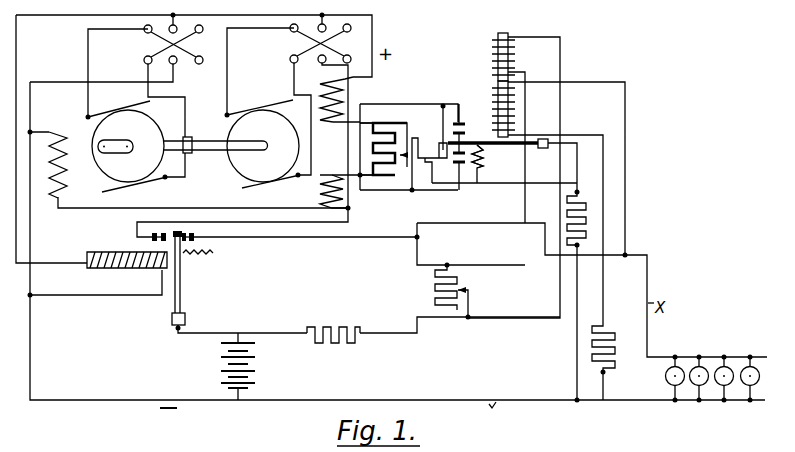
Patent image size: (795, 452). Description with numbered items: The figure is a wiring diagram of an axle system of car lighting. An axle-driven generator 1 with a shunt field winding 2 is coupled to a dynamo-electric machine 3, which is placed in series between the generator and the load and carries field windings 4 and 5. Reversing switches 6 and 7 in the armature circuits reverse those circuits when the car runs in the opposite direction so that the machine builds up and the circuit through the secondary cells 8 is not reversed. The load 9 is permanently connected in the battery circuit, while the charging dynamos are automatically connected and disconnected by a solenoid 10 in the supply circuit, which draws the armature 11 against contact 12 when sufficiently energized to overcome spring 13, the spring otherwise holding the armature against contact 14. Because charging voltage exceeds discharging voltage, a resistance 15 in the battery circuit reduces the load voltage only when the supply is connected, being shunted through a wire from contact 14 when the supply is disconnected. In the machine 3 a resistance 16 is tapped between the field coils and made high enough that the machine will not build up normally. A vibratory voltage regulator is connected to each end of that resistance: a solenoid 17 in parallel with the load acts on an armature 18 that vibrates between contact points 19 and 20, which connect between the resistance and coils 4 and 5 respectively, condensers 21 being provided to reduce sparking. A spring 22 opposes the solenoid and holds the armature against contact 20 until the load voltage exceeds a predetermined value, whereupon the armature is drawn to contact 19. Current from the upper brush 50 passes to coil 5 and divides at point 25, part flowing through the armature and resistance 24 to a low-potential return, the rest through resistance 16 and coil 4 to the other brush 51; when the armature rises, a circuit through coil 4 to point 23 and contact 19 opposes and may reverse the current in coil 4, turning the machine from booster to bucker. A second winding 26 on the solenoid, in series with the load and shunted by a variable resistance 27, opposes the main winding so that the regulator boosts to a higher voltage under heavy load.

The generator 1 is at (128, 146).
The shunt field winding 2 is at (66, 171).
The dynamo-electric machine 3 is at (263, 146).
The field winding 4 is at (320, 83).
The field winding 5 is at (318, 197).
The reversing switch 6 is at (146, 33).
The reversing switch 7 is at (293, 32).
The secondary cells 8 is at (225, 361).
The load 9 is at (703, 357).
The solenoid 10 is at (126, 248).
The armature 11 is at (182, 290).
The contact 12 is at (149, 243).
The spring 13 is at (199, 258).
The contact 14 is at (187, 231).
The resistance 15 is at (348, 343).
The resistance 16 is at (376, 140).
The solenoid 17 is at (494, 100).
The armature 18 is at (510, 146).
The contact point 19 is at (462, 123).
The contact point 20 is at (464, 165).
The condenser 21 is at (421, 150).
The spring 22 is at (480, 162).
The point 23 is at (362, 123).
The resistance 24 is at (578, 197).
The point 25 is at (362, 176).
The second winding 26 is at (494, 47).
The variable resistance 27 is at (435, 293).
The upper brush 50 is at (241, 110).
The brush 51 is at (258, 186).